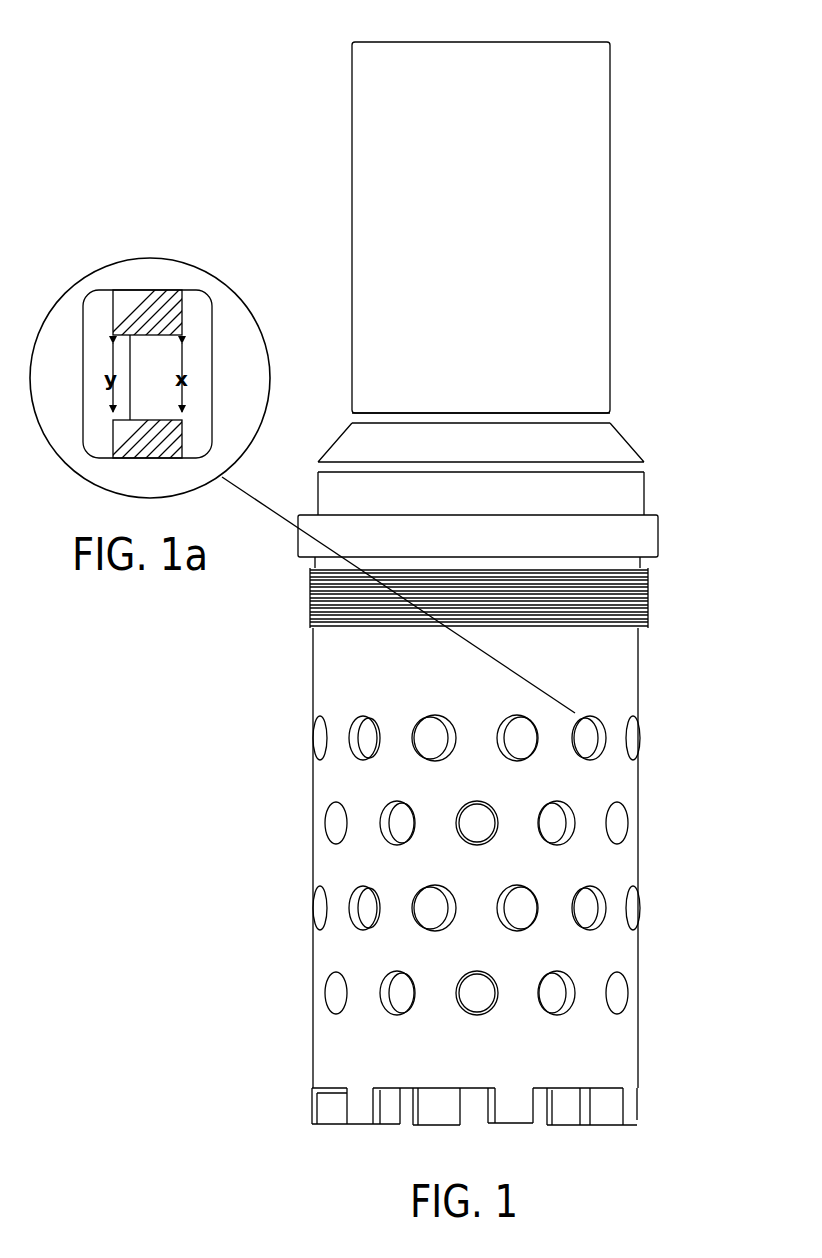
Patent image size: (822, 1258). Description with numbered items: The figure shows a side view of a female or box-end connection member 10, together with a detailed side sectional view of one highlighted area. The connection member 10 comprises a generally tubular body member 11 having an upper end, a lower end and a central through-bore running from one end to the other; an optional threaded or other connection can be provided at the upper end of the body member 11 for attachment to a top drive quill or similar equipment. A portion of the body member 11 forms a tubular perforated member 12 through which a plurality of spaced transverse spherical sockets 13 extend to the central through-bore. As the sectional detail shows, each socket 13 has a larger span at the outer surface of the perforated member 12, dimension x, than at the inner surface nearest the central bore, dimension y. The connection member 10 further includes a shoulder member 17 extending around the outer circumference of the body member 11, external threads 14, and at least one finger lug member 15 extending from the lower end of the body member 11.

In FIG. 1, the box end connection member 10 is at (646, 769).
In FIG. 1, the body member 11 is at (567, 102).
In FIG. 1, the perforated member 12 is at (583, 982).
In FIG. 1a, the perforated member 12 is at (177, 300).
In FIG. 1, the spherical socket 13 is at (595, 910).
In FIG. 1a, the spherical socket 13 is at (157, 415).
In FIG. 1, the external threads 14 is at (643, 597).
In FIG. 1, the finger lug member 15 is at (350, 1108).
In FIG. 1, the shoulder member 17 is at (637, 538).